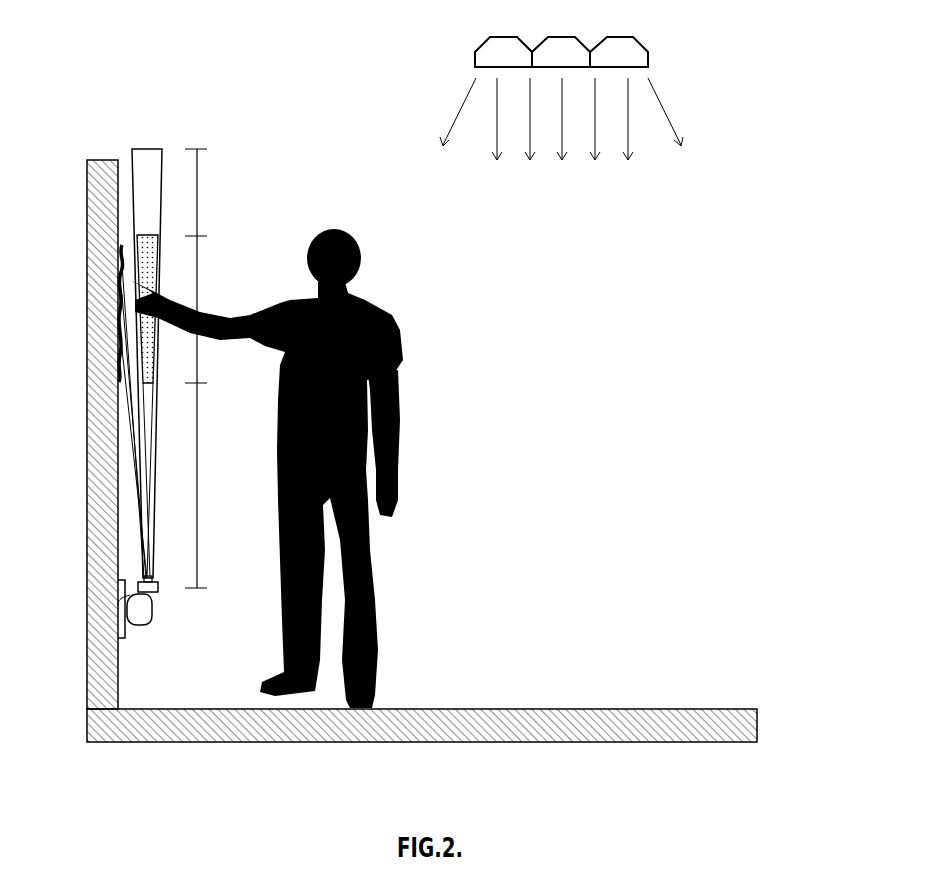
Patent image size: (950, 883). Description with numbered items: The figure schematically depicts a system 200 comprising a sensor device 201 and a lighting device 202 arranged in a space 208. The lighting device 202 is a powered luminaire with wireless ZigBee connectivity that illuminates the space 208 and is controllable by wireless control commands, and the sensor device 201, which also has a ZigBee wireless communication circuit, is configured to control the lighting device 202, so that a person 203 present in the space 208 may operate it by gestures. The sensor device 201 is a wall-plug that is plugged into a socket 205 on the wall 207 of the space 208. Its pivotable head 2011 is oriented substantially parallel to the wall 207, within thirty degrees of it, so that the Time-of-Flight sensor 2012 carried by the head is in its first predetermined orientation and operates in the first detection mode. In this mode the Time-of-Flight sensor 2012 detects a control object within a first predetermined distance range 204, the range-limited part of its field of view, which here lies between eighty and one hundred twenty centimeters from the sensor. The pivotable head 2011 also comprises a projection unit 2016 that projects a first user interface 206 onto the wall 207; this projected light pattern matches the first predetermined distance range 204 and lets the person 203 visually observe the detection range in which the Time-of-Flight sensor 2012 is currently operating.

The system 200 is at (735, 338).
The sensor device 201 is at (135, 596).
The pivotable head 2011 is at (158, 590).
The Time-of-Flight sensor 2012 is at (150, 579).
The projection unit 2016 is at (128, 578).
The lighting device 202 is at (475, 60).
The person 203 is at (380, 312).
The first predetermined distance range 204 is at (150, 148).
The socket 205 is at (118, 620).
The first user interface 206 is at (118, 335).
The wall 207 is at (87, 527).
The space 208 is at (635, 572).